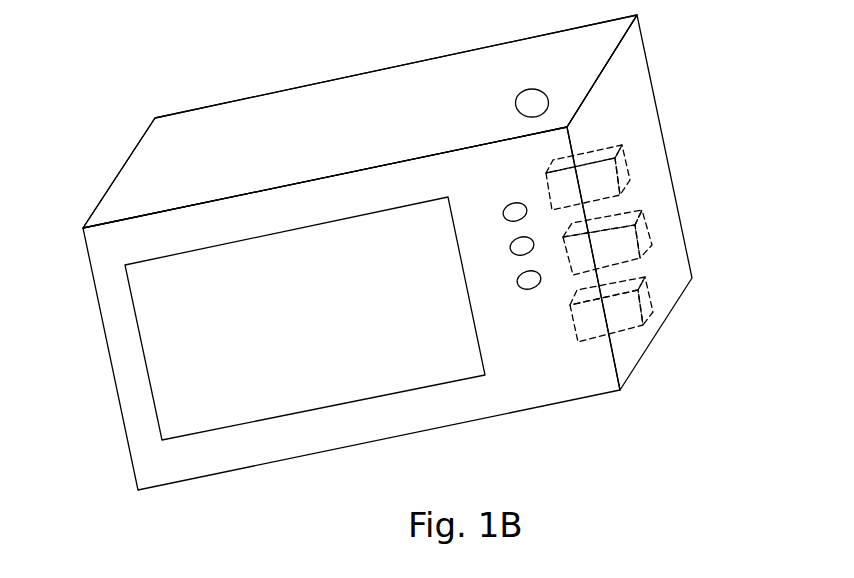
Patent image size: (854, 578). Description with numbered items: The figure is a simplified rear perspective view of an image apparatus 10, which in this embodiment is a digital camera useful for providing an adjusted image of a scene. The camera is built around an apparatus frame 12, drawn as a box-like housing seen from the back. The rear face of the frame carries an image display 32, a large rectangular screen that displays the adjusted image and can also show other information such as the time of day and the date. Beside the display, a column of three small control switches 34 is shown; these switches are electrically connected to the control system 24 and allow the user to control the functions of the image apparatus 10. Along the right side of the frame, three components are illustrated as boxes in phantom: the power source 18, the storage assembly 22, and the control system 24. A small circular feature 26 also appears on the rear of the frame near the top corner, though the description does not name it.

The image apparatus 10 is at (158, 109).
The apparatus frame 12 is at (280, 108).
The power source 18 is at (650, 303).
The storage assembly 22 is at (640, 230).
The control system 24 is at (627, 172).
The indicator aperture 26 is at (535, 98).
The image display 32 is at (166, 305).
The control switches 34 is at (535, 308).